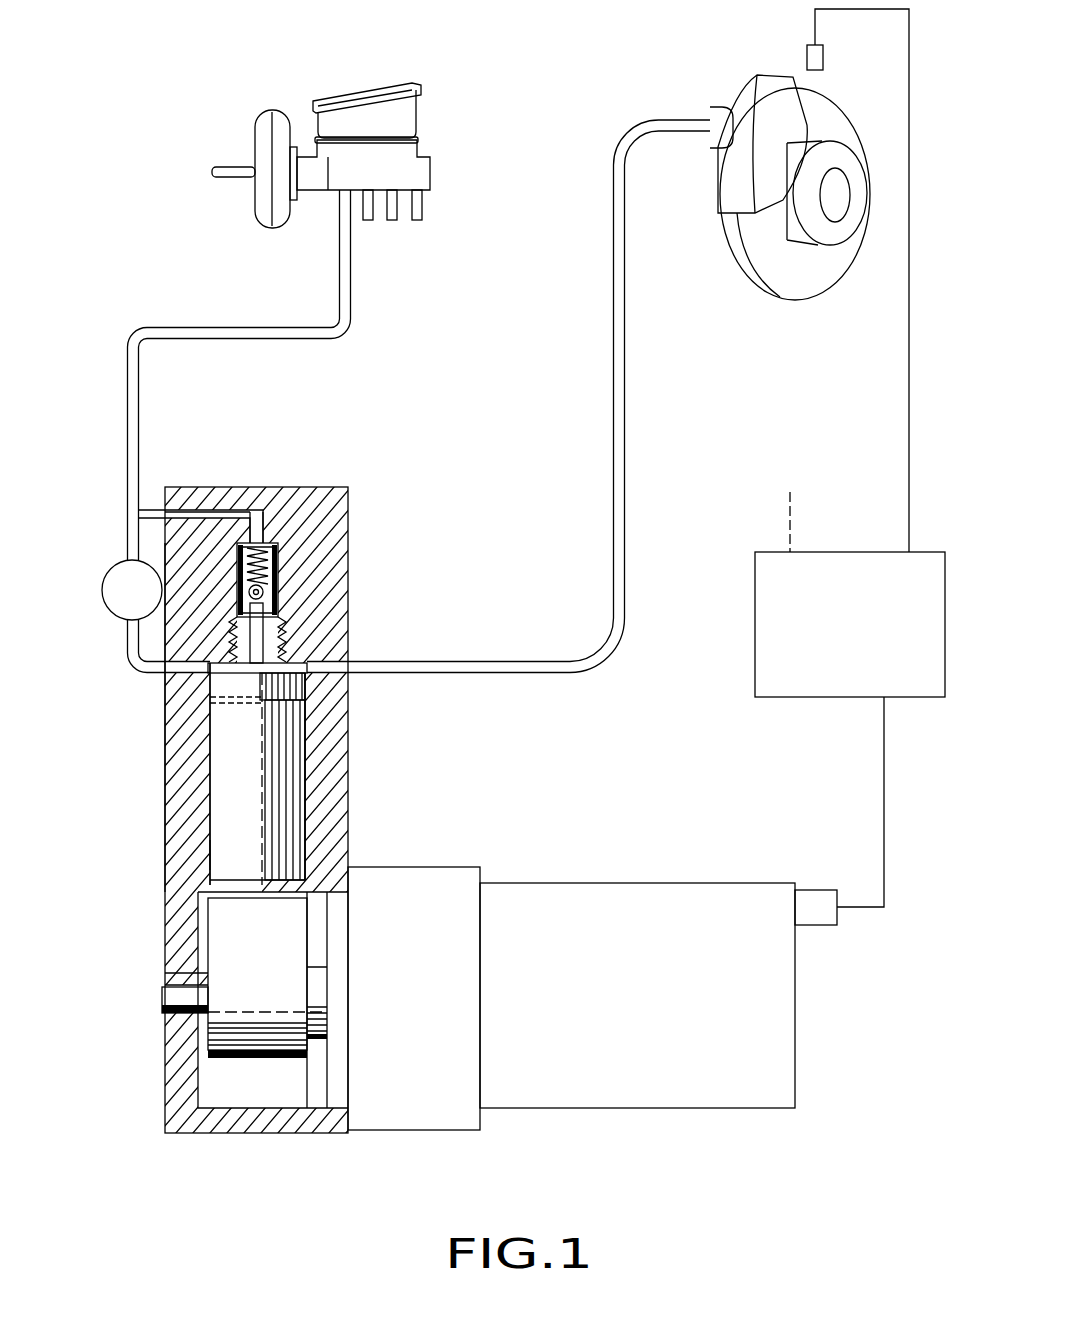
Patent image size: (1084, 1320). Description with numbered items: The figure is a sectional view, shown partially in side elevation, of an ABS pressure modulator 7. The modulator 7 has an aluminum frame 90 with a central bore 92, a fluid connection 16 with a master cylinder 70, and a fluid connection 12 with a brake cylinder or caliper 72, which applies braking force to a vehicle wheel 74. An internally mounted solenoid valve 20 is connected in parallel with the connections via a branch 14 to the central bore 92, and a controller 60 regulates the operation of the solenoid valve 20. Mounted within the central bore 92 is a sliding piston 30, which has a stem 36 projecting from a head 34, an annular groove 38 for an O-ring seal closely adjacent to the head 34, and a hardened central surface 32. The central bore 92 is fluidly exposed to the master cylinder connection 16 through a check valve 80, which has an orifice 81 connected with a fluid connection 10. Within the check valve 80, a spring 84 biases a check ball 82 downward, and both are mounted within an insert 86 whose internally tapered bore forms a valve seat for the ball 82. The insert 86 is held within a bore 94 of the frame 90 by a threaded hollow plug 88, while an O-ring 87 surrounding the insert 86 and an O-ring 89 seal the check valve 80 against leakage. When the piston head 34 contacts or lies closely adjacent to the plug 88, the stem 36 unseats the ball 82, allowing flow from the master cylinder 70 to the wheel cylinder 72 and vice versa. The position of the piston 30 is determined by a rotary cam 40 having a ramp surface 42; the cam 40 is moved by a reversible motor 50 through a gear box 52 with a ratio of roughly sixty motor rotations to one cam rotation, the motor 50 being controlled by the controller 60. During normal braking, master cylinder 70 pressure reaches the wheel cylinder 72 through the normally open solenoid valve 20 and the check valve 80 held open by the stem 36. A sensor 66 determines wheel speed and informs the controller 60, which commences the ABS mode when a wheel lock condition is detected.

The ABS pressure modulator 7 is at (348, 487).
The fluid connection 10 is at (247, 497).
The fluid connection 12 is at (415, 667).
The branch 14 is at (130, 548).
The fluid connection 16 is at (140, 510).
The solenoid valve 20 is at (117, 615).
The piston 30 is at (207, 807).
The central surface 32 is at (240, 900).
The head 34 is at (290, 670).
The stem 36 is at (280, 628).
The annular groove 38 is at (285, 732).
The rotary cam 40 is at (207, 930).
The ramp surface 42 is at (293, 990).
The reversible motor 50 is at (612, 930).
The gear box 52 is at (425, 878).
The controller 60 is at (788, 657).
The sensor 66 is at (810, 50).
The master cylinder 70 is at (397, 123).
The brake cylinder 72 is at (765, 100).
The vehicle wheel 74 is at (780, 262).
The check valve 80 is at (280, 578).
The orifice 81 is at (257, 507).
The check ball 82 is at (263, 593).
The spring 84 is at (272, 542).
The insert 86 is at (268, 557).
The O-ring 87 is at (238, 617).
The threaded hollow plug 88 is at (300, 668).
The O-ring 89 is at (224, 676).
The frame 90 is at (177, 750).
The central bore 92 is at (205, 866).
The bore 94 is at (240, 555).